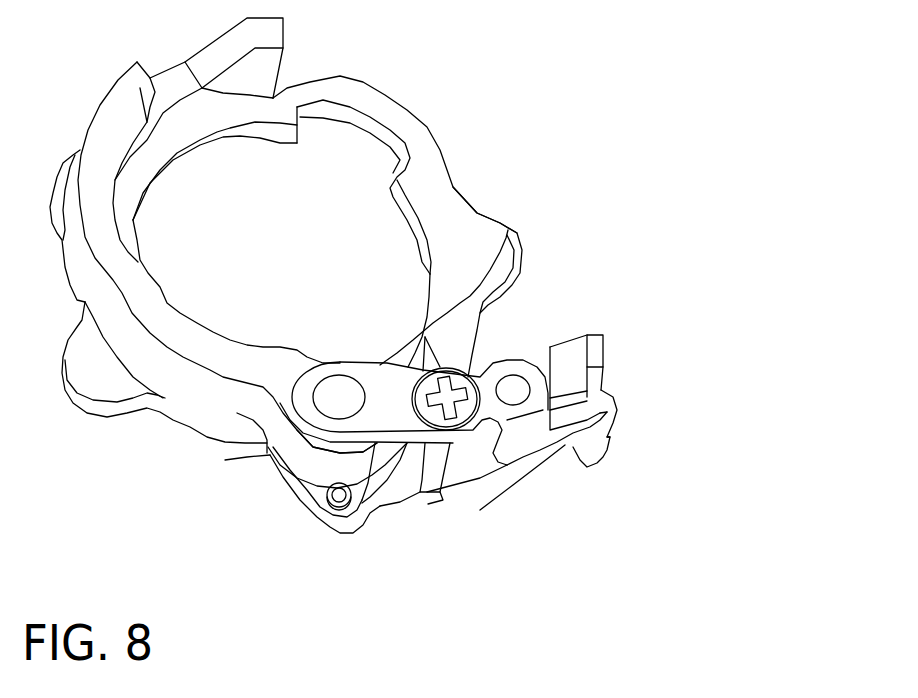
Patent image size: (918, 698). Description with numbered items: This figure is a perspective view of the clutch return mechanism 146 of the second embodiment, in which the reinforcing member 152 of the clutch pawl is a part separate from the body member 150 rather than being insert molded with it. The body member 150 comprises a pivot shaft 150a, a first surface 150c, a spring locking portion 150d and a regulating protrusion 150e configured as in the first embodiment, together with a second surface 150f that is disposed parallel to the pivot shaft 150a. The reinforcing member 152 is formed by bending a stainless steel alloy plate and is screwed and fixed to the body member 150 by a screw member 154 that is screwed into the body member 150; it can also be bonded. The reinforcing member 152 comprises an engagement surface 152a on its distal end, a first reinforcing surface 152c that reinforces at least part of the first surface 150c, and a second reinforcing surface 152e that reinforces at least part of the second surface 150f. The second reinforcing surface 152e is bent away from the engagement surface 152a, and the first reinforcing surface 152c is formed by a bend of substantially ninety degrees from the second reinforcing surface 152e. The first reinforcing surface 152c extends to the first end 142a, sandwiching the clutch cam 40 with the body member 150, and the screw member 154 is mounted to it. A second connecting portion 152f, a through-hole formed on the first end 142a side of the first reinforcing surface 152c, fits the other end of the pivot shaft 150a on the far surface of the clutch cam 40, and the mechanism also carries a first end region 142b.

The clutch cam 40 is at (286, 235).
The first end 142a is at (267, 457).
The right side protrusion of housing 142b is at (603, 343).
The clutch return mechanism 146 is at (621, 419).
The body member 150 is at (470, 470).
The pivot shaft 150a is at (340, 397).
The first surface 150c is at (568, 358).
The spring locking portion 150d is at (285, 470).
The regulating protrusion 150e is at (595, 445).
The second surface 150f is at (473, 478).
The reinforcing member 152 is at (515, 358).
The engagement surface 152a is at (598, 330).
The first reinforcing surface 152c is at (508, 230).
The second reinforcing surface 152e is at (533, 460).
The second connecting portion 152f is at (327, 357).
The screw member 154 is at (435, 375).